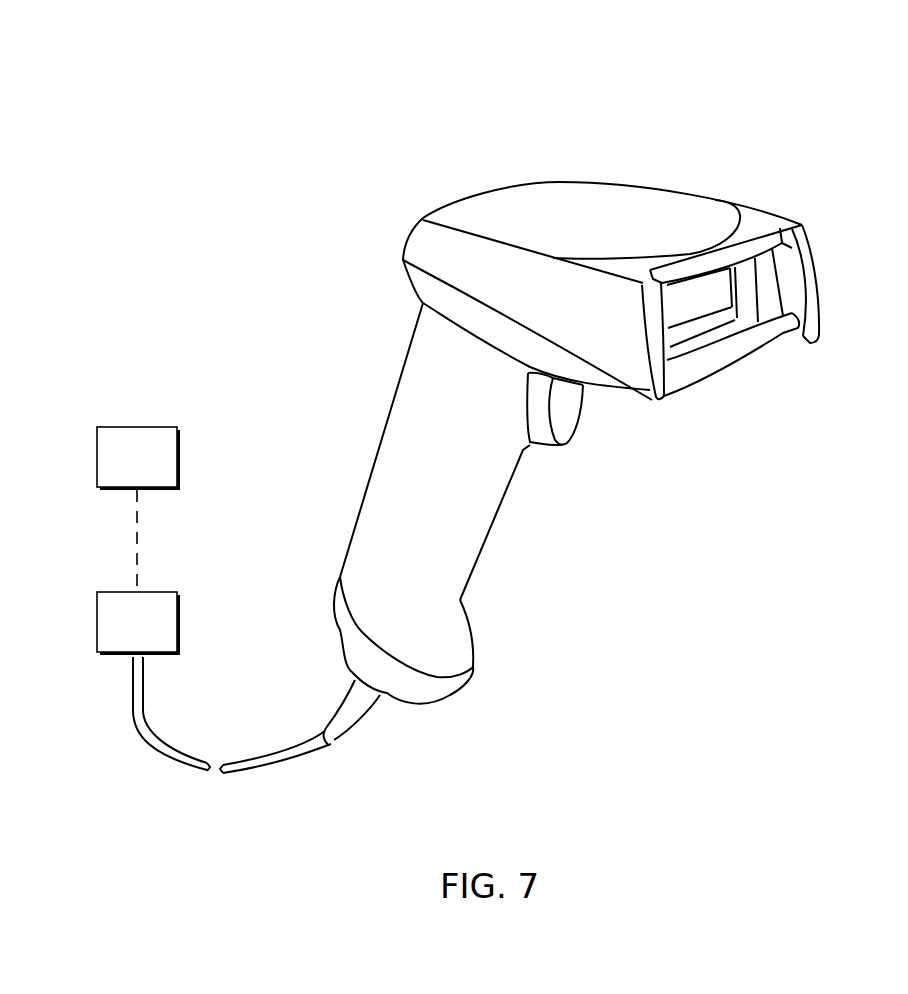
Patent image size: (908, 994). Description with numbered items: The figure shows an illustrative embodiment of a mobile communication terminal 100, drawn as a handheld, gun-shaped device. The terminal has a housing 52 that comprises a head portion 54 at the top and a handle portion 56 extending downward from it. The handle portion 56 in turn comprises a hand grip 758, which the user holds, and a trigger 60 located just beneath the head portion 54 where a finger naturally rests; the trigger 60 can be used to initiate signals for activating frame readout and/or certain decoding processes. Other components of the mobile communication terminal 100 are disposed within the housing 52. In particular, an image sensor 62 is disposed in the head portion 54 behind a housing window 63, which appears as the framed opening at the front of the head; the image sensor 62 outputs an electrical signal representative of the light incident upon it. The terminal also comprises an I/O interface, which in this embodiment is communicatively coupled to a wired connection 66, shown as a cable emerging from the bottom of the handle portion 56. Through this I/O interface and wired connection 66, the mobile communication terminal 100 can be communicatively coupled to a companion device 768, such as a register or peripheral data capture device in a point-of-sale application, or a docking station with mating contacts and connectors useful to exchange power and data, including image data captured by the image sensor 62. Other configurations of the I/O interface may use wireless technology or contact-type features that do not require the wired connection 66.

The mobile communication terminal 100 is at (778, 124).
The housing 52 is at (457, 202).
The head portion 54 is at (829, 233).
The image sensor 62 is at (700, 297).
The housing window 63 is at (699, 298).
The trigger 60 is at (563, 420).
The handle portion 56 is at (515, 559).
The hand grip 758 is at (390, 460).
The wired connection 66 is at (123, 635).
The companion device 768 is at (117, 468).